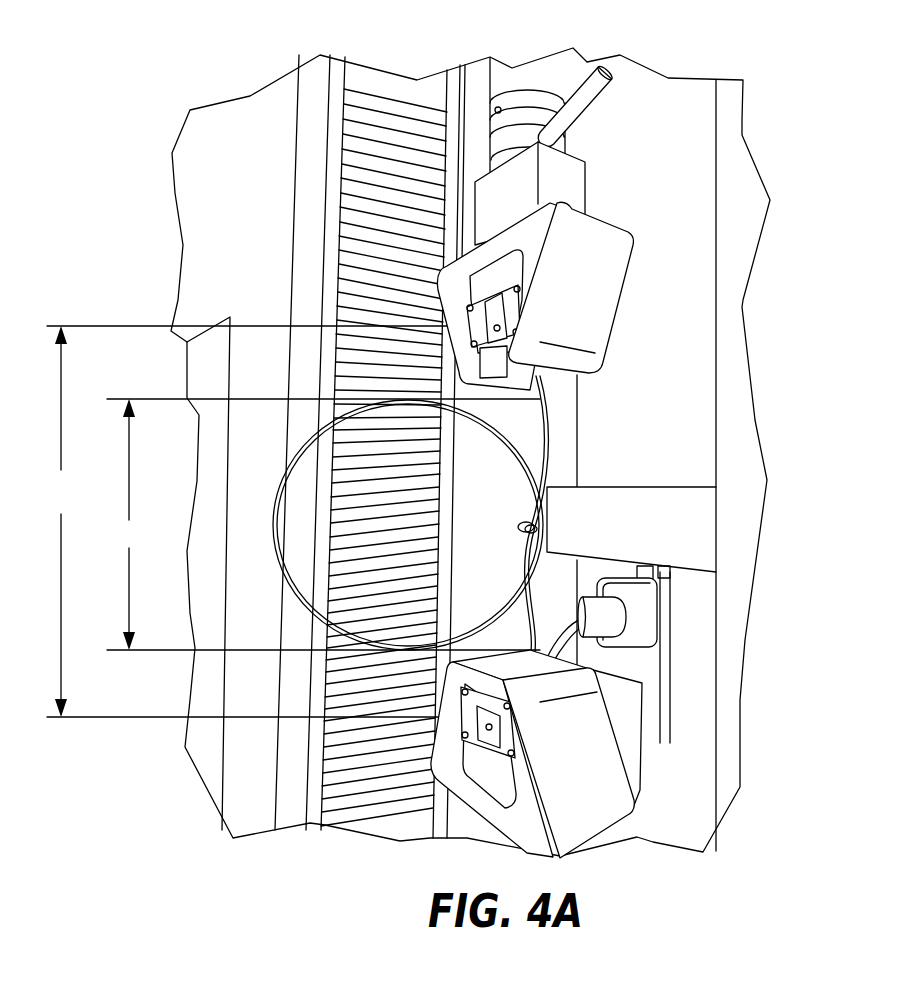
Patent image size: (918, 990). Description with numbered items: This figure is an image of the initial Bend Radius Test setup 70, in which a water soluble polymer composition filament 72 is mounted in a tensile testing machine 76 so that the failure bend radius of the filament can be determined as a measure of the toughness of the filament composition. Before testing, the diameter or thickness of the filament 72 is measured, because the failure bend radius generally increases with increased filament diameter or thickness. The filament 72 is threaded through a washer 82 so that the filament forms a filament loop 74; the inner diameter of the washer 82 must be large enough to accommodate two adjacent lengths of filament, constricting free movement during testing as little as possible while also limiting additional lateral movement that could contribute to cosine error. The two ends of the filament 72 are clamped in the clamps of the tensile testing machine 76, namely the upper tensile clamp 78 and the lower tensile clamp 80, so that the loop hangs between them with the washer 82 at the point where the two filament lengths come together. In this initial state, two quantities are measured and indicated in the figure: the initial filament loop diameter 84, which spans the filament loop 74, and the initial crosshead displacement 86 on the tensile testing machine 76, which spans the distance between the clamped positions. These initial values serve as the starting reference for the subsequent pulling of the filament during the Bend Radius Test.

The initial Bend Radius Test setup 70 is at (730, 50).
The water soluble polymer composition filament 72 is at (547, 440).
The filament loop 74 is at (587, 613).
The tensile testing machine 76 is at (313, 246).
The upper tensile clamp 78 is at (603, 278).
The lower tensile clamp 80 is at (593, 765).
The washer 82 is at (508, 587).
The initial filament loop diameter 84 is at (323, 524).
The initial crosshead displacement 86 is at (260, 521).